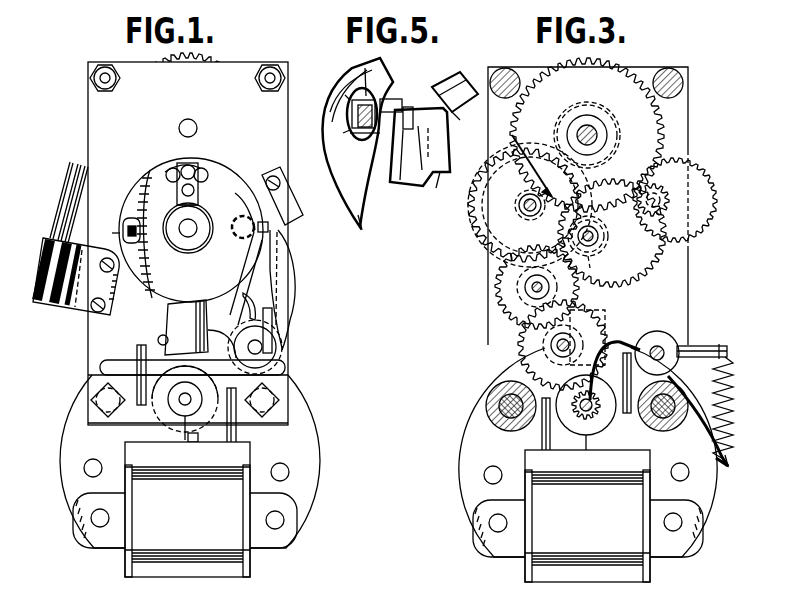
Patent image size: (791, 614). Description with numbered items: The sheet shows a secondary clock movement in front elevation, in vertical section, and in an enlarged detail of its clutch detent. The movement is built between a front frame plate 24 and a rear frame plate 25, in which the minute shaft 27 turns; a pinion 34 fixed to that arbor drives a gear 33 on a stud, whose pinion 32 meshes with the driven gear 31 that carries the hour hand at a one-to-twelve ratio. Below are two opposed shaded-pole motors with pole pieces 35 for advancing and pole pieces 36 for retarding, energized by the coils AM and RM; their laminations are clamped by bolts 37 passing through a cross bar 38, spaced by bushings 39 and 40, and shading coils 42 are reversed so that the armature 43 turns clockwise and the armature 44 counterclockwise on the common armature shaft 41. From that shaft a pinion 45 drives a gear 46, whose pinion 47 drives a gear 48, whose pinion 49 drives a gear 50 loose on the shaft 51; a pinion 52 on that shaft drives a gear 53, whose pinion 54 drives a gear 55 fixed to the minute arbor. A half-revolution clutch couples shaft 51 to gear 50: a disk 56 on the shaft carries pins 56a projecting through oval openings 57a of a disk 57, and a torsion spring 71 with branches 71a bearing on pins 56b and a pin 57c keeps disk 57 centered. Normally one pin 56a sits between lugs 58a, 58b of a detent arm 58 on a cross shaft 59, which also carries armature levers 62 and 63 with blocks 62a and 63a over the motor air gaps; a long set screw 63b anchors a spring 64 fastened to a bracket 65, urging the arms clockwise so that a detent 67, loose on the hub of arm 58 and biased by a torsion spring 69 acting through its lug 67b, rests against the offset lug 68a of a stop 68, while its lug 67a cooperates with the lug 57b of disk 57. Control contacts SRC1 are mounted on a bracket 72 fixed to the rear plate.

In FIG. 1, the front frame plate 24 is at (332, 602).
In FIG. 3, the front frame plate 24 is at (497, 144).
In FIG. 1, the rear frame plate 25 is at (242, 72).
In FIG. 1, the minute shaft 27 is at (188, 119).
In FIG. 3, the minute shaft 27 is at (590, 131).
In FIG. 3, the driven gear 31 is at (518, 205).
In FIG. 3, the pinion 32 is at (523, 162).
In FIG. 3, the gear 33 is at (480, 186).
In FIG. 3, the pinion 34 is at (576, 110).
In FIG. 1, the pole pieces of forward drive motor 35 is at (300, 441).
In FIG. 3, the pole pieces of reverse drive motor 36 is at (468, 484).
In FIG. 3, the bolts 37 is at (508, 398).
In FIG. 1, the cross bar 38 is at (123, 422).
In FIG. 1, the bushings 39 is at (92, 385).
In FIG. 3, the bushings 40 is at (486, 405).
In FIG. 1, the armature shaft 41 is at (180, 410).
In FIG. 3, the armature shaft 41 is at (592, 416).
In FIG. 1, the shading coils 42 is at (136, 350).
In FIG. 3, the shading coils 42 is at (542, 438).
In FIG. 1, the armature of advance motor 43 is at (197, 442).
In FIG. 3, the armature of retarding motor 44 is at (586, 432).
In FIG. 3, the pinion 45 is at (605, 337).
In FIG. 3, the gear 46 is at (592, 328).
In FIG. 3, the pinion 47 is at (600, 355).
In FIG. 3, the gear 48 is at (497, 294).
In FIG. 3, the pinion 49 is at (520, 305).
In FIG. 3, the gear 50 is at (636, 270).
In FIG. 1, the shaft 51 is at (192, 223).
In FIG. 3, the shaft 51 is at (599, 232).
In FIG. 3, the pinion 52 is at (598, 268).
In FIG. 3, the gear 53 is at (705, 190).
In FIG. 3, the pinion 54 is at (657, 194).
In FIG. 3, the gear 55 is at (632, 92).
In FIG. 1, the disk 56 is at (235, 193).
In FIG. 5, the disk 56 is at (360, 212).
In FIG. 1, the pins 56a is at (125, 225).
In FIG. 5, the pins 56a is at (380, 100).
In FIG. 1, the pins 56b is at (198, 188).
In FIG. 5, the disk 57 is at (382, 80).
In FIG. 5, the oval openings 57a is at (362, 66).
In FIG. 1, the lug 57b is at (120, 233).
In FIG. 5, the lug 57b is at (370, 135).
In FIG. 1, the pin 57c is at (186, 165).
In FIG. 1, the detent arm 58 is at (292, 283).
In FIG. 5, the detent arm 58 is at (405, 167).
In FIG. 5, the lug 58a is at (345, 95).
In FIG. 5, the lug 58b is at (343, 133).
In FIG. 1, the cross shaft 59 is at (262, 343).
In FIG. 3, the cross shaft 59 is at (667, 348).
In FIG. 1, the armature lever 62 is at (247, 306).
In FIG. 1, the armature block 62a is at (187, 320).
In FIG. 3, the armature lever 63 is at (634, 326).
In FIG. 3, the armature block 63a is at (572, 320).
In FIG. 3, the set screw 63b is at (714, 346).
In FIG. 3, the spring 64 is at (734, 392).
In FIG. 3, the bracket 65 is at (728, 438).
In FIG. 1, the detent 67 is at (290, 302).
In FIG. 5, the detent 67 is at (440, 176).
In FIG. 5, the offset lug 67a is at (407, 108).
In FIG. 1, the offset lug 67b is at (285, 262).
In FIG. 1, the stop 68 is at (284, 202).
In FIG. 5, the stop 68 is at (451, 88).
In FIG. 1, the offset lug 68a is at (276, 229).
In FIG. 5, the offset lug 68a is at (466, 123).
In FIG. 1, the torsion spring 69 is at (282, 355).
In FIG. 1, the torsion spring 71 is at (184, 256).
In FIG. 1, the branches 71a is at (165, 172).
In FIG. 1, the bracket 72 is at (97, 283).
In FIG. 1, the control contacts SRC1 is at (82, 165).
In FIG. 1, the coil of advancing motor AM is at (155, 558).
In FIG. 3, the coil of retarding motor RM is at (588, 562).